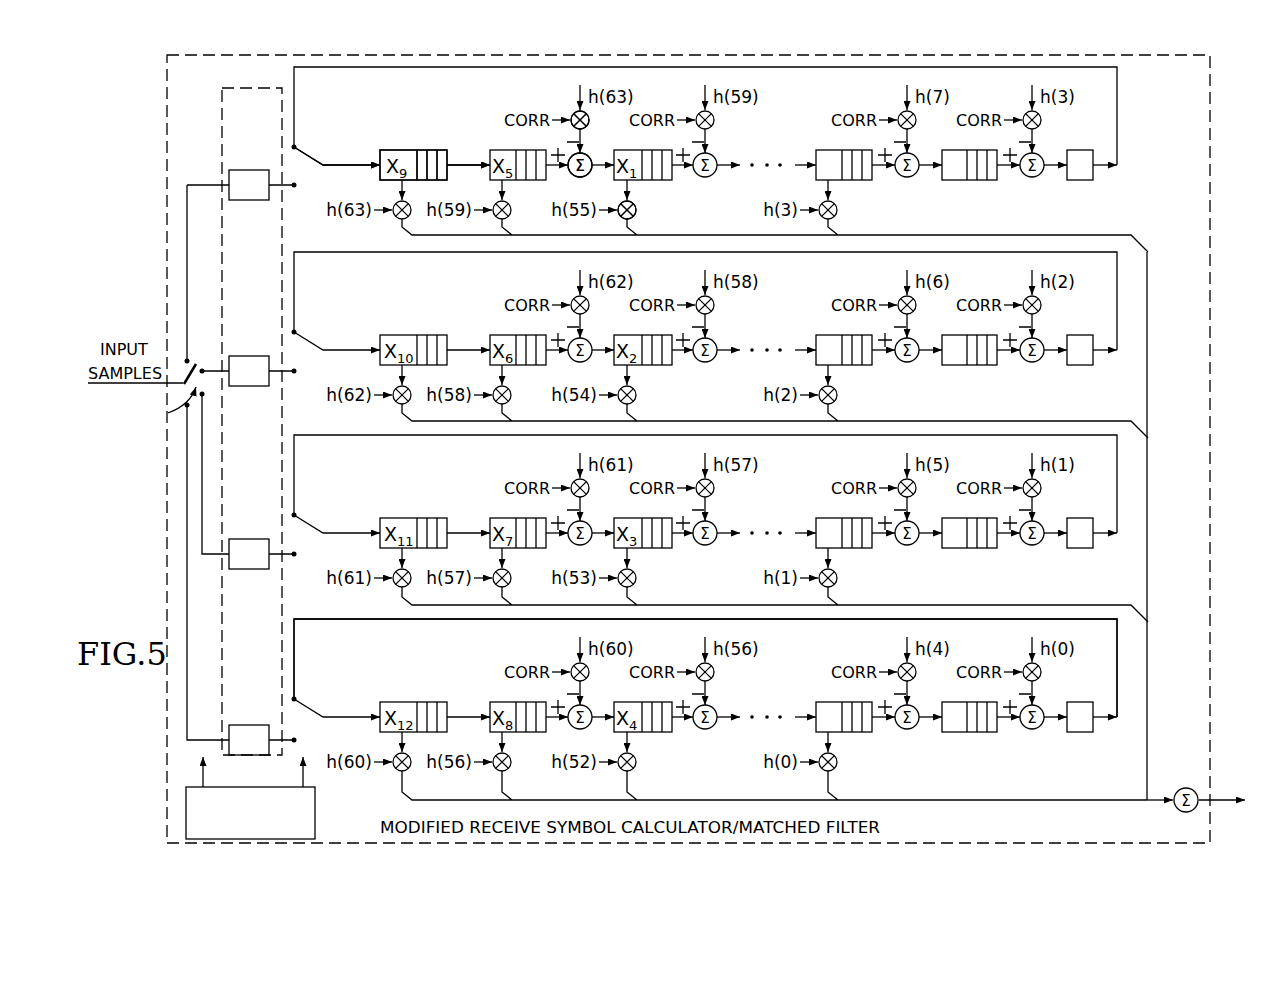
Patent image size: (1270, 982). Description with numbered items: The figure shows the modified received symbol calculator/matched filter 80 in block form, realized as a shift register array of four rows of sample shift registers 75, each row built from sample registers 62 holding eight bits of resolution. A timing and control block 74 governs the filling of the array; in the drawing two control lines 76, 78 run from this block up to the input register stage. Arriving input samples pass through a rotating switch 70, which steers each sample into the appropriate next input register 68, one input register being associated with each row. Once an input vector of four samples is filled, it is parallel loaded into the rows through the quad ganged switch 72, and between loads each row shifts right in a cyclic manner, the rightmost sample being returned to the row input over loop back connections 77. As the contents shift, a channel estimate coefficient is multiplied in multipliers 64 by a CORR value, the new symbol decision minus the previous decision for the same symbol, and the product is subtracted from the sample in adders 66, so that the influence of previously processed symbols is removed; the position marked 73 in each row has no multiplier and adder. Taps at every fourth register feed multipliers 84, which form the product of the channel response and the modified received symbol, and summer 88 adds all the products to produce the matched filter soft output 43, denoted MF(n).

The matched filter soft output 43 is at (1218, 801).
The sample register 62 is at (425, 150).
The multiplier 64 is at (572, 112).
The adder 66 is at (590, 153).
The input register 68 is at (247, 87).
The switch 70 is at (168, 408).
The quad ganged switch 72 is at (307, 158).
The row position without multiplier/adder 73 is at (465, 162).
The timing and control block 74 is at (316, 823).
The sample shift register 75 is at (1046, 753).
The timing signal line 76 is at (203, 775).
The loop back connection 77 is at (1117, 678).
The control signal line 78 is at (305, 777).
The modified received symbol calculator/matched filter 80 is at (1216, 203).
The multiplier 84 is at (637, 211).
The summer 88 is at (1182, 787).